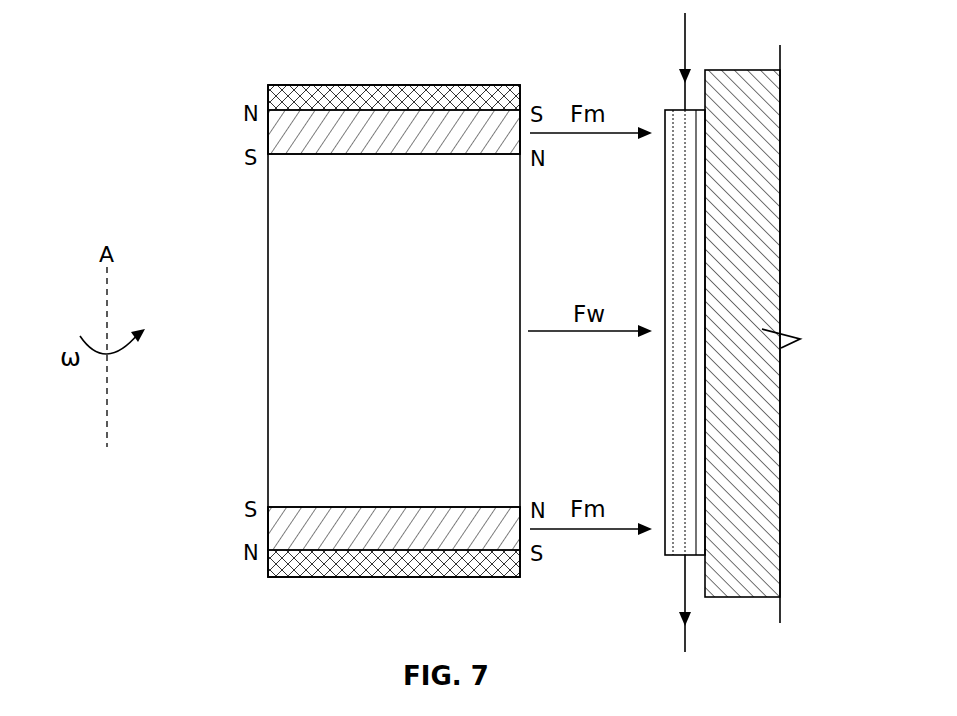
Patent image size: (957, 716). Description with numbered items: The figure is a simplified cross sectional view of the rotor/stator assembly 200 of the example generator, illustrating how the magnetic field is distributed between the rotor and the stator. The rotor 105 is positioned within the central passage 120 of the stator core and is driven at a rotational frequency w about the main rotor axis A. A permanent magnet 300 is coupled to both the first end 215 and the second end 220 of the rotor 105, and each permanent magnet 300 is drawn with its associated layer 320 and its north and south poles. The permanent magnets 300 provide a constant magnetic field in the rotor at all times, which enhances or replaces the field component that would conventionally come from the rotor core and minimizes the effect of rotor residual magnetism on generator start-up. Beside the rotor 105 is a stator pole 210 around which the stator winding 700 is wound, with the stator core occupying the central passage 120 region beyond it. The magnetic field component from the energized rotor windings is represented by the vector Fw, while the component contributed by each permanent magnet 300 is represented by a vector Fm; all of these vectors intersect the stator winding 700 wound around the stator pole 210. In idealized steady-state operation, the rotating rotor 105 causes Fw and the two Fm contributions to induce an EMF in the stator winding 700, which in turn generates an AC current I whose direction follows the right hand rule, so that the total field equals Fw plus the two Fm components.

The rotor/stator assembly 200 is at (123, 55).
The rotor 105 is at (293, 337).
The first end 215 is at (302, 157).
The second end 220 is at (303, 507).
The permanent magnet 300 is at (337, 122).
The magnet backing layer 320 is at (390, 95).
The stator pole 210 is at (665, 197).
The central passage 120 is at (757, 142).
The stator winding 700 is at (682, 520).